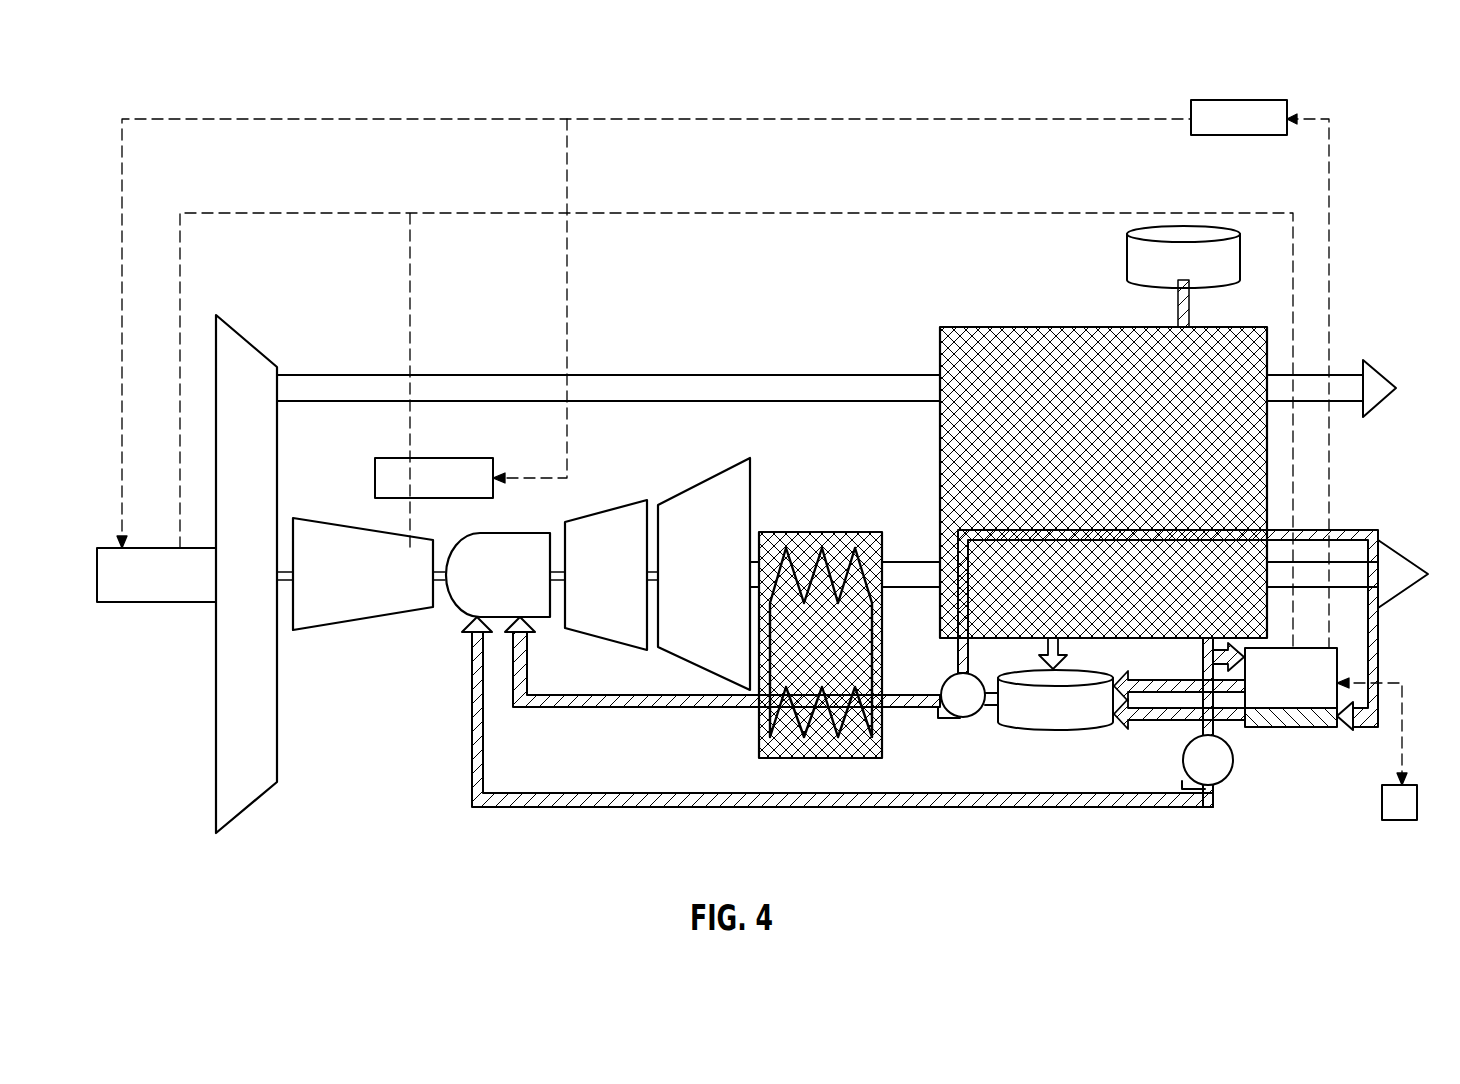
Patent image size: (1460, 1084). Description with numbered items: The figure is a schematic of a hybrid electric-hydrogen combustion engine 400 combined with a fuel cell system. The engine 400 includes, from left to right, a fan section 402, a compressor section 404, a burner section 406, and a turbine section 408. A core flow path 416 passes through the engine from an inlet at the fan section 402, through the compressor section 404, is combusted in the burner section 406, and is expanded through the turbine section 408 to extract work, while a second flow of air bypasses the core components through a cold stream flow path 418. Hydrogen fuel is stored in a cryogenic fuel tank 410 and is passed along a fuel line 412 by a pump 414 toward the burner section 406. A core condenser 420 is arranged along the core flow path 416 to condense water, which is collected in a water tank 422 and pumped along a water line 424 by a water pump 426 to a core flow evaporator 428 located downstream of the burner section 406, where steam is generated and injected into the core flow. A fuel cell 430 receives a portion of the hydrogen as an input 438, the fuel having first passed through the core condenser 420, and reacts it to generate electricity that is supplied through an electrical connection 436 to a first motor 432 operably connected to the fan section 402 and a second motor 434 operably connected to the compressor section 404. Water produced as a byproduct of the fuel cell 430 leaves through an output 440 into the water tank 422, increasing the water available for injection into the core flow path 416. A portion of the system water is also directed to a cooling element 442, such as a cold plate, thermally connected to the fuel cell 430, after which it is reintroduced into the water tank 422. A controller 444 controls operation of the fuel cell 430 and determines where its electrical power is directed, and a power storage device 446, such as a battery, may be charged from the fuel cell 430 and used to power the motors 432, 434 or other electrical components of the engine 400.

The hybrid electric-hydrogen combustion engine 400 is at (172, 104).
The fan section 402 is at (242, 822).
The compressor section 404 is at (319, 630).
The burner section 406 is at (456, 617).
The turbine section 408 is at (621, 646).
The cryogenic fuel tank 410 is at (1180, 234).
The fuel line 412 is at (878, 802).
The pump 414 is at (1210, 788).
The core flow path 416 is at (930, 575).
The cold stream flow path 418 is at (818, 388).
The core condenser 420 is at (1245, 500).
The water tank 422 is at (1042, 722).
The water line 424 is at (565, 703).
The water pump 426 is at (962, 708).
The core flow evaporator 428 is at (822, 548).
The fuel cell 430 is at (1325, 665).
The first motor 432 is at (130, 592).
The second motor 434 is at (458, 478).
The electrical connection 436 is at (805, 212).
The input 438 is at (1232, 650).
The output 440 is at (1218, 690).
The cooling element 442 is at (1298, 727).
The controller 444 is at (1382, 800).
The power storage device 446 is at (1205, 100).